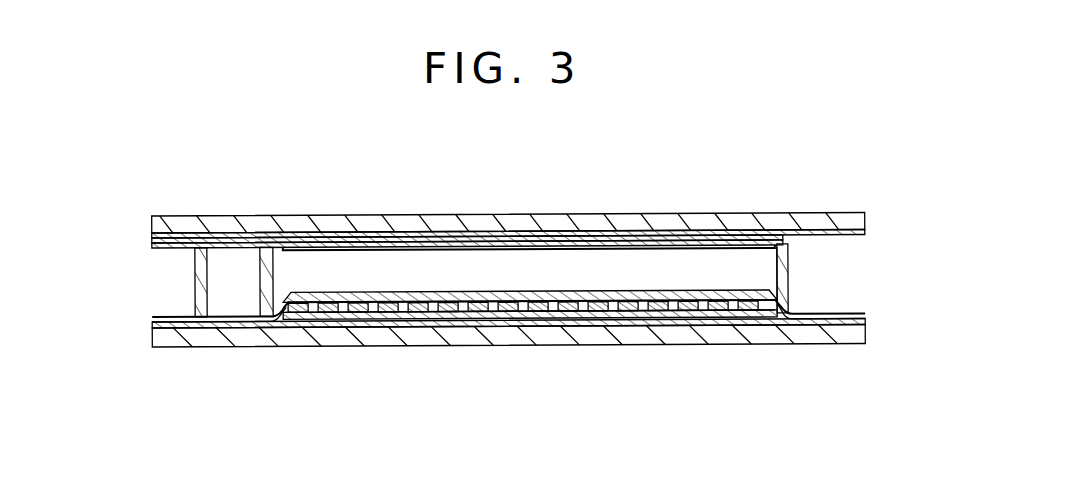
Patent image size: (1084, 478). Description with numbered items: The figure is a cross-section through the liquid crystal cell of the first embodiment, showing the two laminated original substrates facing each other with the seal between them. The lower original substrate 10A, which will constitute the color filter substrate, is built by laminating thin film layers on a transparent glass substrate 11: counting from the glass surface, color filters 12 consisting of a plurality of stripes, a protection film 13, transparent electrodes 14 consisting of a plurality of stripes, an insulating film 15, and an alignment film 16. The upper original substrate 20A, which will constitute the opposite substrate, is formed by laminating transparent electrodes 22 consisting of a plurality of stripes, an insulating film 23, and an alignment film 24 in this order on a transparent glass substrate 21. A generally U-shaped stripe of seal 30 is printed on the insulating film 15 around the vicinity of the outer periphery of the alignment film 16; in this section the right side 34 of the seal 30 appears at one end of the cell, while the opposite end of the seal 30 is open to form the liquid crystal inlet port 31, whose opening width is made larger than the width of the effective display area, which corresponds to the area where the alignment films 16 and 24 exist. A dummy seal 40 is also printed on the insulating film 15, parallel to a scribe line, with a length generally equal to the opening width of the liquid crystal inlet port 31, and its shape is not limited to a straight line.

The original substrate 10A is at (508, 294).
The transparent glass substrate 11 is at (477, 340).
The color filters 12 is at (555, 325).
The protection film 13 is at (647, 313).
The transparent electrodes 14 is at (707, 308).
The insulating film 15 is at (298, 322).
The alignment film 16 is at (648, 292).
The original substrate 20A is at (508, 191).
The transparent glass substrate 21 is at (343, 224).
The transparent electrodes 22 is at (472, 237).
The insulating film 23 is at (545, 242).
The alignment film 24 is at (410, 240).
The seal 30 is at (789, 285).
The liquid crystal inlet port 31 is at (264, 282).
The right side 34 is at (788, 272).
The dummy seal 40 is at (194, 285).